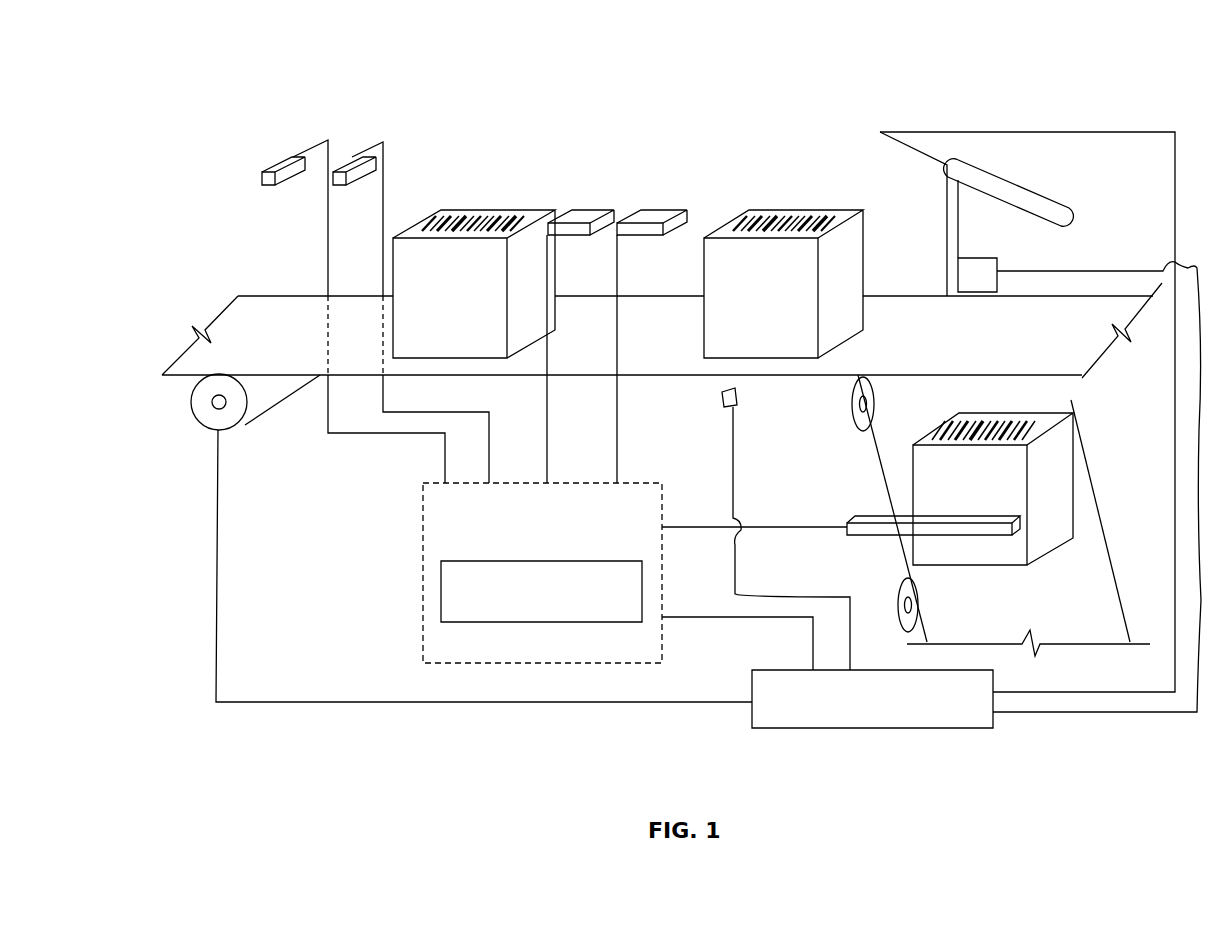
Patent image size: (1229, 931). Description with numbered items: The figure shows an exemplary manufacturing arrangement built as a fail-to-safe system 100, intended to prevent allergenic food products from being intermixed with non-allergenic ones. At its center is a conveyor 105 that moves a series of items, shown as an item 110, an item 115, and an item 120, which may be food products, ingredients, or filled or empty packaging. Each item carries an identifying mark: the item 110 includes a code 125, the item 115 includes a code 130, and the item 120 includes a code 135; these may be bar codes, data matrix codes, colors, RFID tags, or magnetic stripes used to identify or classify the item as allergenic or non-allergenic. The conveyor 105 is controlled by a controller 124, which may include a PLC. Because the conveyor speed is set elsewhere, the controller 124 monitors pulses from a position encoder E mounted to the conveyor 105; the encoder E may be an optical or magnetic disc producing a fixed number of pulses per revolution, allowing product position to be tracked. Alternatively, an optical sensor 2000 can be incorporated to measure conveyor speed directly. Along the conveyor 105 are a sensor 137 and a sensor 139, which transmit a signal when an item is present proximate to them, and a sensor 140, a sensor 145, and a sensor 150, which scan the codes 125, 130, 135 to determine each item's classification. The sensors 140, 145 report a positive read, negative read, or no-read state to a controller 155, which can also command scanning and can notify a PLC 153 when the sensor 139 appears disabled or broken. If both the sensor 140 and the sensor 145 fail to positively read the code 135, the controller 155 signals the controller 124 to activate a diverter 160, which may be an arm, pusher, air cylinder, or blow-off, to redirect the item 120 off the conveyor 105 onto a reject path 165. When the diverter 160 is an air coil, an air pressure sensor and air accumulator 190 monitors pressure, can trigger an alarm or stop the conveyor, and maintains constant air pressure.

The fail-to-safe system 100 is at (288, 75).
The conveyor 105 is at (313, 293).
The item 110 is at (466, 304).
The item 115 is at (779, 304).
The item 120 is at (986, 502).
The controller 124 is at (806, 668).
The code 125 is at (500, 214).
The code 130 is at (812, 214).
The code 135 is at (1027, 421).
The sensor 137 is at (275, 163).
The sensor 139 is at (345, 160).
The sensor 140 is at (597, 200).
The sensor 145 is at (668, 200).
The sensor 150 is at (891, 516).
The PLC 153 is at (559, 653).
The controller 155 is at (497, 560).
The diverter 160 is at (1014, 178).
The reject path 165 is at (877, 449).
The air pressure sensor and air accumulator 190 is at (1000, 259).
The optical sensor 2000 is at (740, 396).
The position encoder E is at (205, 412).